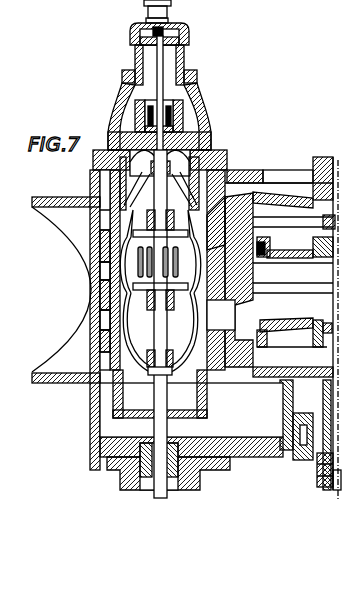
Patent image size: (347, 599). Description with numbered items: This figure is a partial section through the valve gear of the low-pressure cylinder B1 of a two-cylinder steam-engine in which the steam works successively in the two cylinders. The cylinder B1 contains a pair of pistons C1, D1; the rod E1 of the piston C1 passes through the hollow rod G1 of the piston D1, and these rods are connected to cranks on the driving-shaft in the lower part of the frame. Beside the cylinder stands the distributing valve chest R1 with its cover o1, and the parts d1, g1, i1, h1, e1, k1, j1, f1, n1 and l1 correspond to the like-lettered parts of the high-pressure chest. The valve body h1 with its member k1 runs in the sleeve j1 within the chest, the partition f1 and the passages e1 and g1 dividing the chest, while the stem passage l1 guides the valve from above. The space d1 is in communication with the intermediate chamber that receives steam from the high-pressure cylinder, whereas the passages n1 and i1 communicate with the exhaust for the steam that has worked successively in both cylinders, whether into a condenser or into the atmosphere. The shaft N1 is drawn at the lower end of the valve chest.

The distributing valve chest R1 is at (97, 152).
The valve-chest cover o1 is at (227, 170).
The low-pressure cylinder B1 is at (277, 223).
The valve-stem passage l1 is at (193, 190).
The exhaust passage n1 is at (116, 216).
The valve-chest partition f1 is at (240, 272).
The piston C1 is at (275, 252).
The valve member k1 is at (140, 260).
The valve sleeve j1 is at (125, 285).
The piston D1 is at (278, 333).
The valve passage e1 is at (115, 300).
The valve body h1 is at (128, 330).
The exhaust passage i1 is at (105, 325).
The valve-chest passage g1 is at (100, 383).
The valve-chest space d1 is at (180, 424).
The hollow piston rod G1 is at (327, 475).
The rotor shaft N1 is at (153, 502).
The piston rod E1 is at (338, 492).